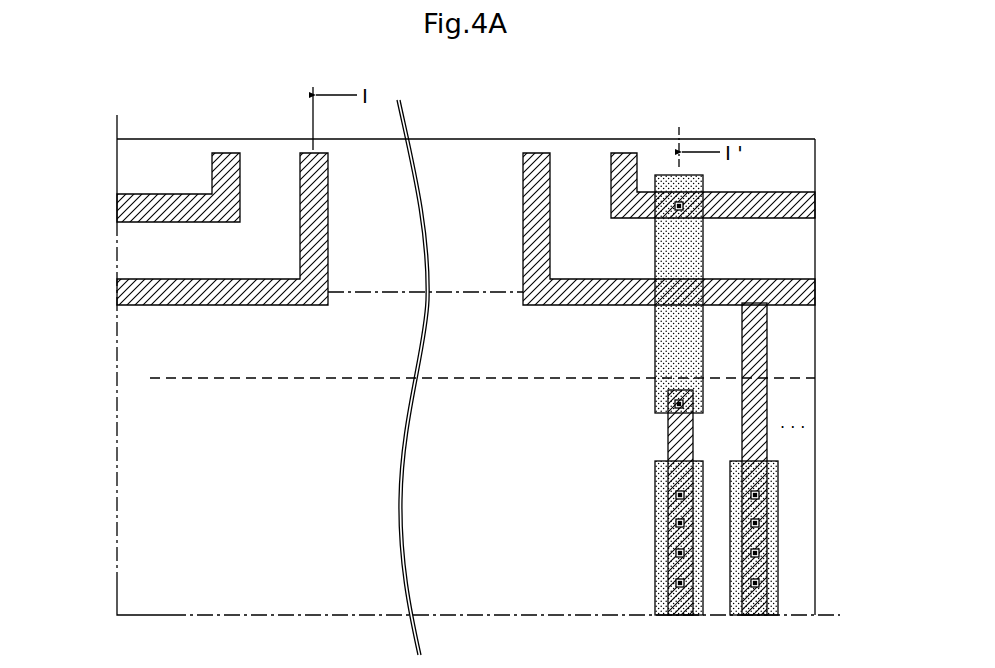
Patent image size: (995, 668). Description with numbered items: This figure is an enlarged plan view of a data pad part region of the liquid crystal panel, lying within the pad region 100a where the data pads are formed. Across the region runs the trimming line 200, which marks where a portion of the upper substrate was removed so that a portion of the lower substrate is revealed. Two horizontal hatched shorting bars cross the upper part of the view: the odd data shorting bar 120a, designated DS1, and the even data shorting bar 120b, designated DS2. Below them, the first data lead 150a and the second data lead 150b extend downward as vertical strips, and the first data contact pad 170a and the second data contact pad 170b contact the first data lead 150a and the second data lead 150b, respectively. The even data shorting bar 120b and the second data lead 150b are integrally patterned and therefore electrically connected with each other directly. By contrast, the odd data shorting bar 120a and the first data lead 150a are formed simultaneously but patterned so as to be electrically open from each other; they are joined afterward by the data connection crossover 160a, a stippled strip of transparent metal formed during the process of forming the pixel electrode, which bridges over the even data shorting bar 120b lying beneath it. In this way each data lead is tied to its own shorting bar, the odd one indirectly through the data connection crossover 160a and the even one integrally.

The pad region 100a is at (150, 433).
The trimming line 200 is at (150, 378).
The odd data shorting bar 120a is at (223, 153).
The even data shorting bar 120b is at (302, 152).
The odd data shorting bar DS1 is at (426, 128).
The even data shorting bar DS2 is at (426, 128).
The data connection crossover 160a is at (697, 247).
The first data lead 150a is at (690, 433).
The second data lead 150b is at (767, 343).
The first data contact pad 170a is at (697, 580).
The second data contact pad 170b is at (778, 512).